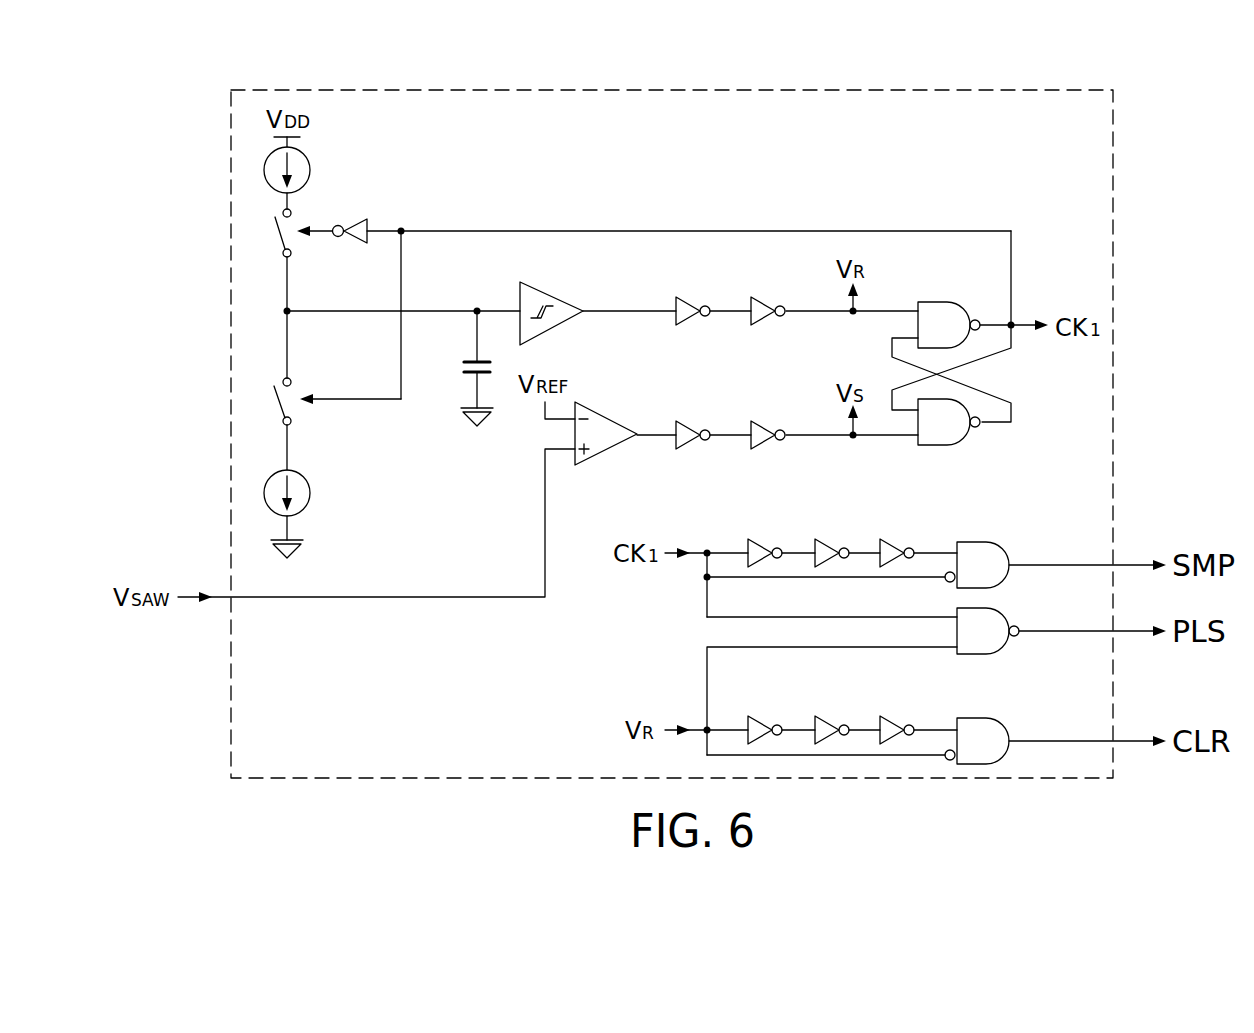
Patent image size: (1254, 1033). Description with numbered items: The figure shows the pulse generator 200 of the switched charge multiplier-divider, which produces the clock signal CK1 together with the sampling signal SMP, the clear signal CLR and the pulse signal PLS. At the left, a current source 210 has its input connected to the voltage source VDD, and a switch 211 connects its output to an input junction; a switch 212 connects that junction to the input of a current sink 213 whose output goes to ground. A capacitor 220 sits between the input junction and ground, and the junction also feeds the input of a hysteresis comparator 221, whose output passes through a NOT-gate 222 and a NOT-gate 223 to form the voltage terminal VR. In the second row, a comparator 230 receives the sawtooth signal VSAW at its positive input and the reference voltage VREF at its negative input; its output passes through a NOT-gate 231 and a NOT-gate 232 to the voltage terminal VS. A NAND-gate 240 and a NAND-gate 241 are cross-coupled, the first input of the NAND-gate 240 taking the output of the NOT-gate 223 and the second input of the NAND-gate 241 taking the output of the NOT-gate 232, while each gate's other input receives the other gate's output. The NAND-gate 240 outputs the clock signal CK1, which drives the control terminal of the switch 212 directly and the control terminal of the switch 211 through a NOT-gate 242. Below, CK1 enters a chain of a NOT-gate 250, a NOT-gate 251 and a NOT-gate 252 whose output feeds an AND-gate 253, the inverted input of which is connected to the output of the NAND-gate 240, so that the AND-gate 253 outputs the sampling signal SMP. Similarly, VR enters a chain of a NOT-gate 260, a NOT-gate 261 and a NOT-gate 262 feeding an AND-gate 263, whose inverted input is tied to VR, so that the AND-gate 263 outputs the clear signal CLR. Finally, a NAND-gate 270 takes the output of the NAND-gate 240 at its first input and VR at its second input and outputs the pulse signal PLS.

The pulse generator 200 is at (1070, 90).
The current source 210 is at (317, 167).
The switch 211 is at (298, 243).
The switch 212 is at (298, 416).
The current sink 213 is at (317, 490).
The capacitor 220 is at (465, 386).
The hysteresis comparator 221 is at (580, 276).
The NOT-gate 222 is at (703, 275).
The NOT-gate 223 is at (778, 275).
The comparator 230 is at (623, 390).
The NOT-gate 231 is at (687, 407).
The NOT-gate 232 is at (762, 407).
The NAND-gate 240 is at (933, 296).
The NAND-gate 241 is at (965, 447).
The NOT-gate 242 is at (368, 217).
The NOT-gate 250 is at (760, 538).
The NOT-gate 251 is at (830, 538).
The NOT-gate 252 is at (892, 538).
The AND-gate 253 is at (1002, 543).
The NOT-gate 260 is at (760, 716).
The NOT-gate 261 is at (830, 716).
The NOT-gate 262 is at (892, 716).
The AND-gate 263 is at (1012, 725).
The NAND-gate 270 is at (1000, 602).